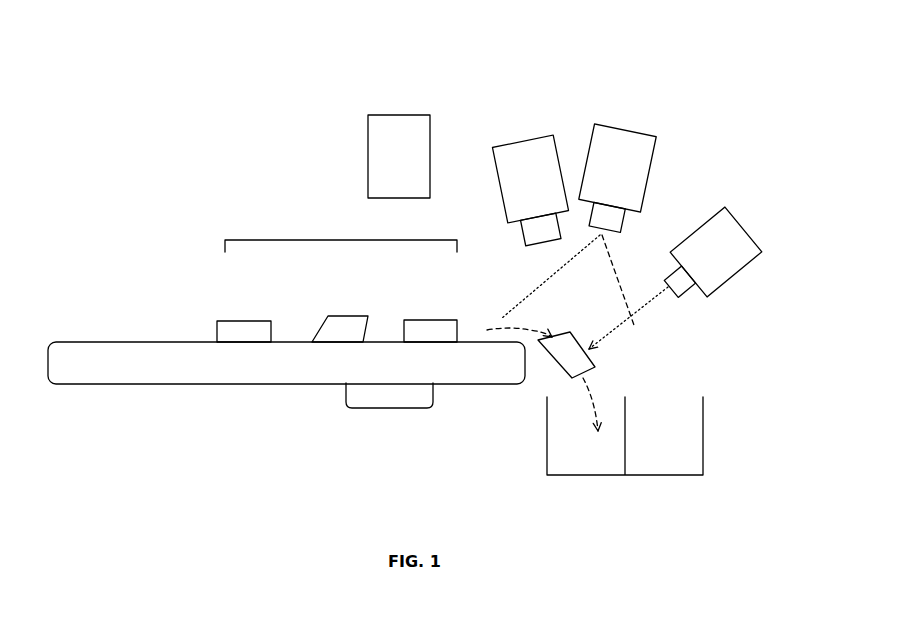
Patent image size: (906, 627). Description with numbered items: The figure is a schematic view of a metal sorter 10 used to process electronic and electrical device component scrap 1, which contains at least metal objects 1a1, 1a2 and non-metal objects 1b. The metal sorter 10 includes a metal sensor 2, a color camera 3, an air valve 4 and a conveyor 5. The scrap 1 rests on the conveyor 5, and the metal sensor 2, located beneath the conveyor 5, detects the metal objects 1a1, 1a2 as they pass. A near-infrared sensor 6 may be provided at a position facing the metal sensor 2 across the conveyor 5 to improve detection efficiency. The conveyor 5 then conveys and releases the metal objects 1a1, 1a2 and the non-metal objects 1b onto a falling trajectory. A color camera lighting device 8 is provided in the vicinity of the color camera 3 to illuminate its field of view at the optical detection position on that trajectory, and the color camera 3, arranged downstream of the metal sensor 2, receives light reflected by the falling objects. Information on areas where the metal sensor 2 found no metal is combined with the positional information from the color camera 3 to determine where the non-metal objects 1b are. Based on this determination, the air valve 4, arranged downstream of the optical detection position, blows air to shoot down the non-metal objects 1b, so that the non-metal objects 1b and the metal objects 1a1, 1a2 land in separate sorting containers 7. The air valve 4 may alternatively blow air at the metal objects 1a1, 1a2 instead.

The metal sorter 10 is at (176, 132).
The electronic and electrical device component scrap 1 is at (341, 240).
The metal object 1a1 is at (430, 328).
The metal object 1a2 is at (250, 335).
The non-metal object 1b is at (337, 322).
The metal sensor 2 is at (414, 404).
The color camera 3 is at (525, 150).
The air valve 4 is at (740, 226).
The conveyor 5 is at (117, 350).
The near-infrared sensor 6 is at (392, 118).
The sorting container 7 is at (708, 440).
The color camera lighting device 8 is at (625, 140).